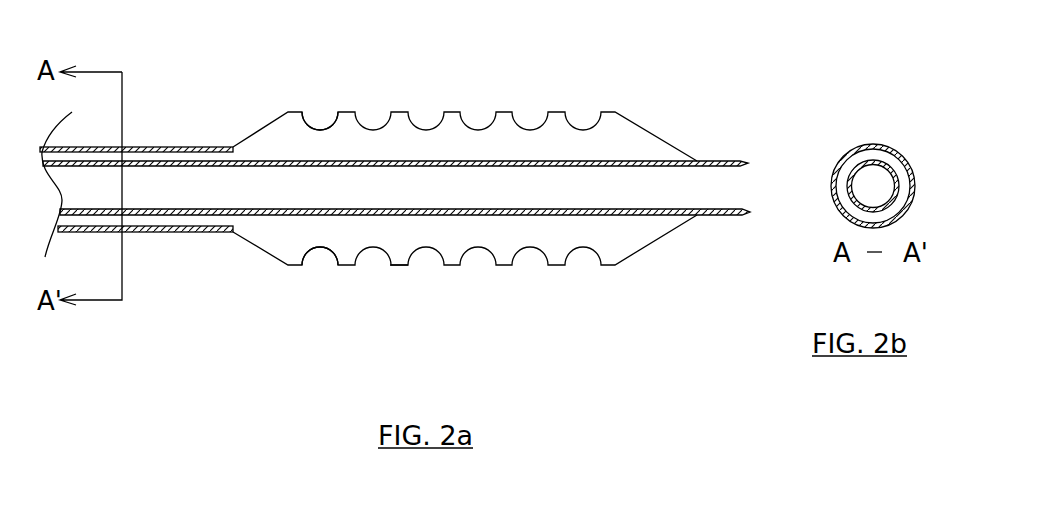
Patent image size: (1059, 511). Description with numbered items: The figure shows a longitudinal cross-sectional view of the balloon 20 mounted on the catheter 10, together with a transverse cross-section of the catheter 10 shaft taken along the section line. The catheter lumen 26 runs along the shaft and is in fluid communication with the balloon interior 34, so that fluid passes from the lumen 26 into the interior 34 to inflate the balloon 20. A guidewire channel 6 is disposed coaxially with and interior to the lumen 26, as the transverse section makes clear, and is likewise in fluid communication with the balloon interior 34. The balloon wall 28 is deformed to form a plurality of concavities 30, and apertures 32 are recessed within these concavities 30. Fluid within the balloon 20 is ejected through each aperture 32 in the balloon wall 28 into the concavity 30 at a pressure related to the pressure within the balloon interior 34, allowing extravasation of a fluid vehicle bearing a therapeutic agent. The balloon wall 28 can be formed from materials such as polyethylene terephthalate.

In FIG. 2A, the catheter 10 is at (159, 133).
In FIG. 2B, the catheter 10 is at (845, 220).
In FIG. 2A, the catheter lumen 26 is at (190, 160).
In FIG. 2B, the catheter lumen 26 is at (870, 155).
In FIG. 2A, the guidewire channel 6 is at (738, 182).
In FIG. 2B, the guidewire channel 6 is at (875, 182).
In FIG. 2A, the balloon 20 is at (643, 123).
In FIG. 2A, the balloon wall 28 is at (640, 250).
In FIG. 2A, the balloon interior 34 is at (338, 130).
In FIG. 2A, the aperture 32 is at (320, 248).
In FIG. 2A, the concavity 30 is at (392, 265).